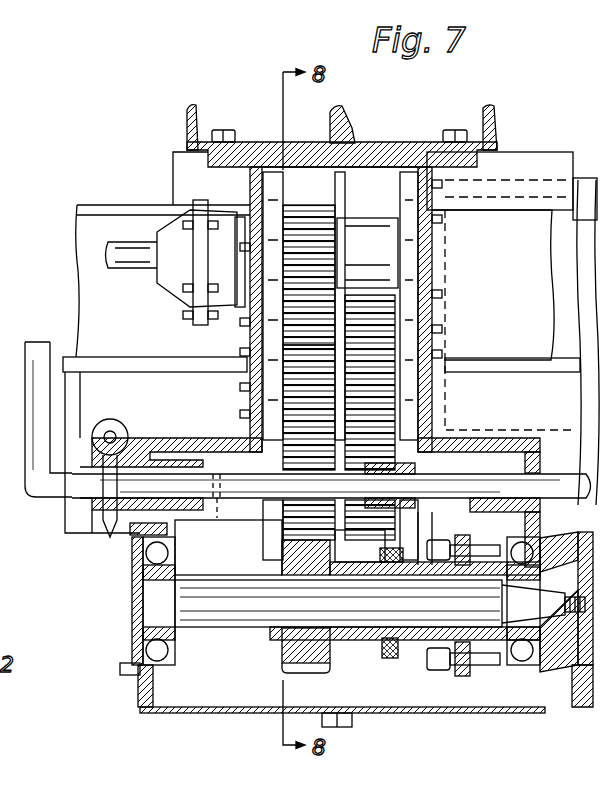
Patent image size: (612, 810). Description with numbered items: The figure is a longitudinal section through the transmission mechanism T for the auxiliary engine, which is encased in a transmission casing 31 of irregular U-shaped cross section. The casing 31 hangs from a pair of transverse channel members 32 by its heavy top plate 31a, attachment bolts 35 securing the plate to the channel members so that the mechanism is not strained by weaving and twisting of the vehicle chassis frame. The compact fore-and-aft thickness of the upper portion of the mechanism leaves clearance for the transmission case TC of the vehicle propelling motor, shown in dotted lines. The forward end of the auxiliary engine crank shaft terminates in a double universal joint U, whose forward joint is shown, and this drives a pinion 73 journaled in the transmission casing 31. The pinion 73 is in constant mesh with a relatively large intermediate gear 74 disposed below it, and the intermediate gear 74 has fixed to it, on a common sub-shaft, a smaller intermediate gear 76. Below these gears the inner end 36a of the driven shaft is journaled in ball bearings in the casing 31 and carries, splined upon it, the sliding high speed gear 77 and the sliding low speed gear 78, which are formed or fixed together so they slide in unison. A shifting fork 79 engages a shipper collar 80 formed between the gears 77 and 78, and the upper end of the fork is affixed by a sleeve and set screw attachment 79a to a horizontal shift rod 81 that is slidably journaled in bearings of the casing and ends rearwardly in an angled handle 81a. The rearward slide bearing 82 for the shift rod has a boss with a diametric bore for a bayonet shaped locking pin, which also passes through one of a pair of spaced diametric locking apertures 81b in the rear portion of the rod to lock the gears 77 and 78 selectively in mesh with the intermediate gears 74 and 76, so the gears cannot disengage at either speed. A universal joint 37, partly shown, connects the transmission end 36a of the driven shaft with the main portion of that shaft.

The transmission casing 31 is at (422, 265).
The heavy top plate 31a is at (367, 163).
The channel members 32 is at (383, 122).
The attachment bolts 35 is at (242, 104).
The inner end of the driven shaft 36a is at (267, 618).
The universal joint 37 is at (587, 670).
The pinion 73 is at (323, 188).
The intermediate gear 74 is at (294, 417).
The smaller intermediate gear 76 is at (370, 307).
The sliding high speed gear 77 is at (287, 666).
The sliding low speed gear 78 is at (457, 682).
The shifting fork 79 is at (390, 527).
The sleeve and set screw attachment 79a is at (386, 467).
The shipper collar 80 is at (378, 650).
The horizontal shift rod 81 is at (556, 477).
The angled handle 81a is at (35, 347).
The locking apertures 81b is at (100, 490).
The slide bearing 82 is at (130, 462).
The transmission mechanism T is at (420, 713).
The transmission case of the vehicle propelling motor TC is at (586, 180).
The double universal joint U is at (168, 278).